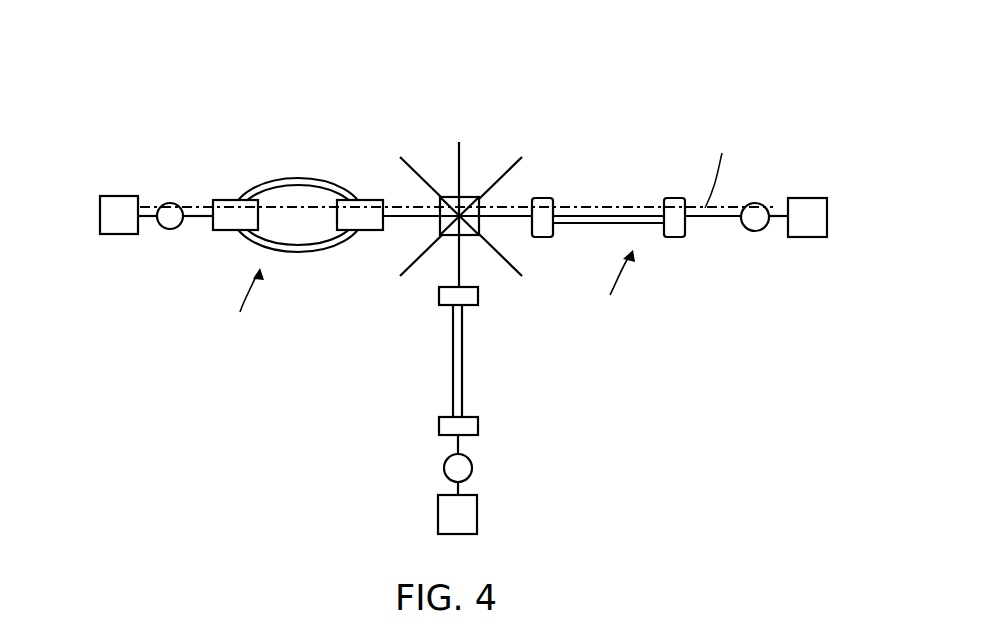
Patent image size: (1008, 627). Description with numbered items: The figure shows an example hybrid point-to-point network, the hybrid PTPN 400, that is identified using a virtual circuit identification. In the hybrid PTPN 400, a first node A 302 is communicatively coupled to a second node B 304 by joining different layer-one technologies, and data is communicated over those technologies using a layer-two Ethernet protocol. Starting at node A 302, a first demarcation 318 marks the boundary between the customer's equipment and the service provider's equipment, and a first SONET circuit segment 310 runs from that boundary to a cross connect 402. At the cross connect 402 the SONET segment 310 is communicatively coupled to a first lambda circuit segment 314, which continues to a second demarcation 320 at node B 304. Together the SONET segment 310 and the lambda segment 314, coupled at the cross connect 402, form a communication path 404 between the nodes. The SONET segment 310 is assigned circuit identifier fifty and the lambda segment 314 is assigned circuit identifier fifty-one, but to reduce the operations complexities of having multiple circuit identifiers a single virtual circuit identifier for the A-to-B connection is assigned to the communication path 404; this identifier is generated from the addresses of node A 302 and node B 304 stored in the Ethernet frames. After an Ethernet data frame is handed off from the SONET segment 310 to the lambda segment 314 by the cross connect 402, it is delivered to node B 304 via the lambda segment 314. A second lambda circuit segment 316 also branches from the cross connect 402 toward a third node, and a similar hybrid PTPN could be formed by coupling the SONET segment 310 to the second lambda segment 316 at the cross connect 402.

The hybrid PTPN 400 is at (128, 87).
The first node A 302 is at (120, 234).
The second node B 304 is at (808, 198).
The first SONET circuit segment 310 is at (252, 188).
The first lambda circuit segment 314 is at (672, 237).
The second lambda circuit segment 316 is at (439, 426).
The first demarcation 318 is at (170, 203).
The second demarcation 320 is at (757, 231).
The cross connect 402 is at (468, 197).
The communication path 404 is at (503, 207).